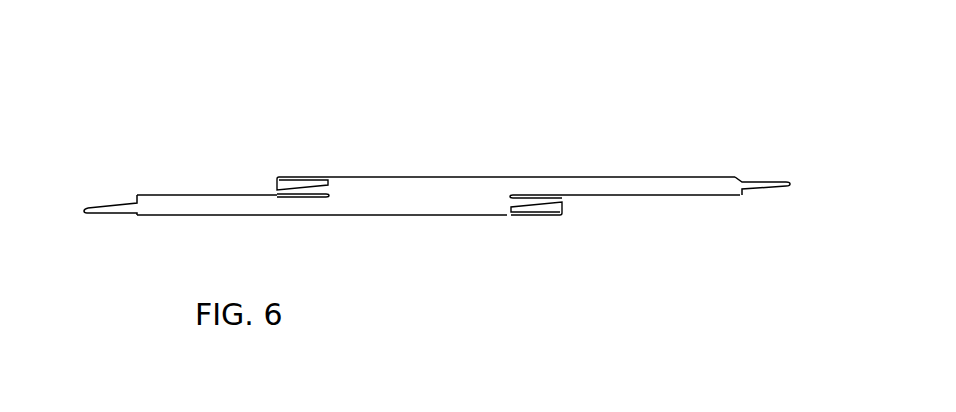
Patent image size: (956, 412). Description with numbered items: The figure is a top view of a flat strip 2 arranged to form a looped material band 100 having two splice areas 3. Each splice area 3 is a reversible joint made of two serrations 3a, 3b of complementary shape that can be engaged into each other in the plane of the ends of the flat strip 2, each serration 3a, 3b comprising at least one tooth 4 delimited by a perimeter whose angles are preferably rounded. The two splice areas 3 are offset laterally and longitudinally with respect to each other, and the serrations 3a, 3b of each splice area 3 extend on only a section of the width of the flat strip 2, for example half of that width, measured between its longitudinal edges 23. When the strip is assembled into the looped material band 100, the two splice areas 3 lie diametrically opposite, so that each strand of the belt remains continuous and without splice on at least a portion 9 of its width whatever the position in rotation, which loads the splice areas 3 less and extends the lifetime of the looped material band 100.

The looped material band 100 is at (437, 178).
The flat strip 2 is at (438, 186).
The splice area 3 is at (410, 198).
The serration 3a is at (437, 194).
The serration 3b is at (292, 176).
The tooth 4 is at (93, 215).
The portion 9 is at (488, 186).
The longitudinal edge 23 is at (212, 216).